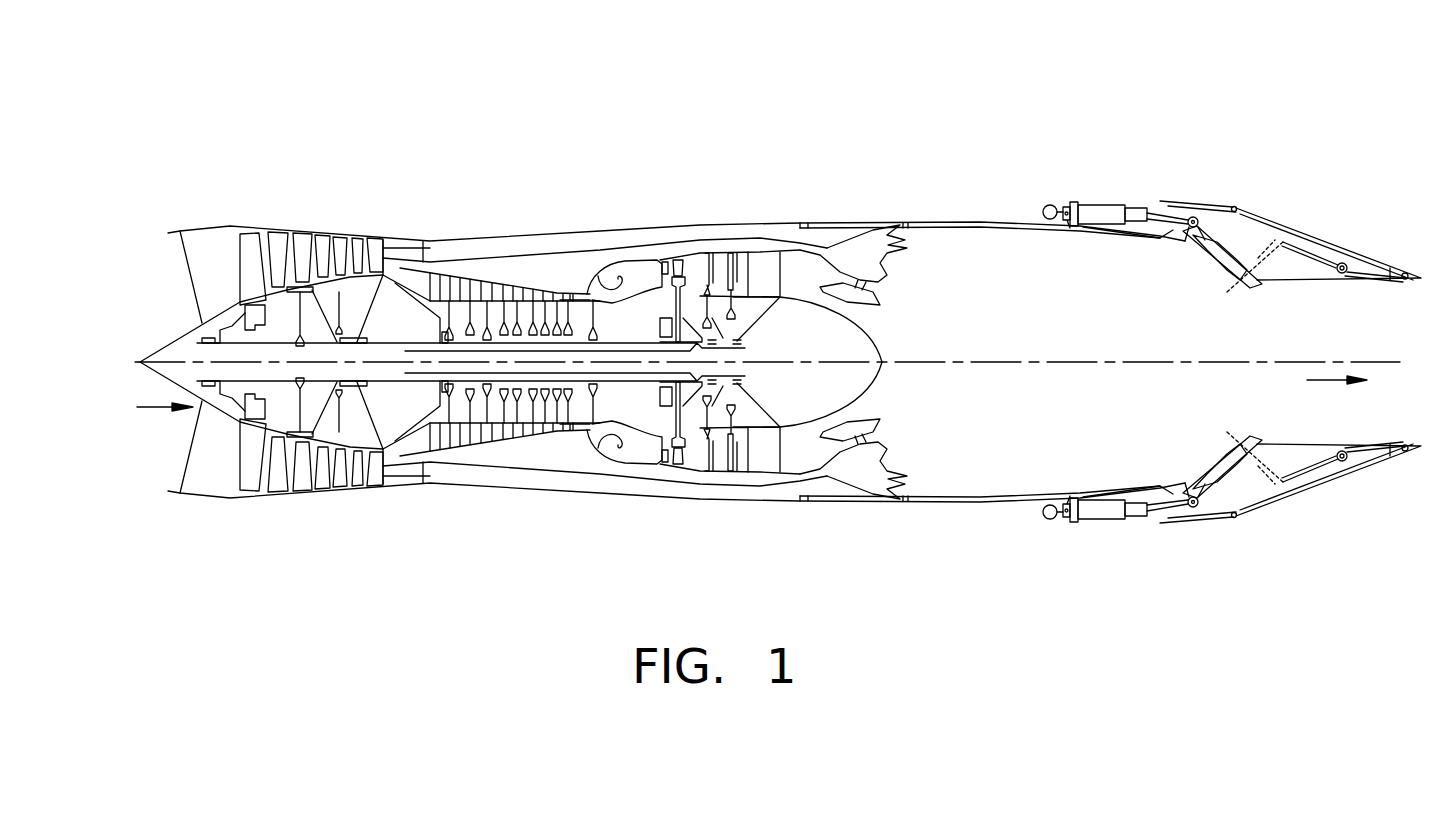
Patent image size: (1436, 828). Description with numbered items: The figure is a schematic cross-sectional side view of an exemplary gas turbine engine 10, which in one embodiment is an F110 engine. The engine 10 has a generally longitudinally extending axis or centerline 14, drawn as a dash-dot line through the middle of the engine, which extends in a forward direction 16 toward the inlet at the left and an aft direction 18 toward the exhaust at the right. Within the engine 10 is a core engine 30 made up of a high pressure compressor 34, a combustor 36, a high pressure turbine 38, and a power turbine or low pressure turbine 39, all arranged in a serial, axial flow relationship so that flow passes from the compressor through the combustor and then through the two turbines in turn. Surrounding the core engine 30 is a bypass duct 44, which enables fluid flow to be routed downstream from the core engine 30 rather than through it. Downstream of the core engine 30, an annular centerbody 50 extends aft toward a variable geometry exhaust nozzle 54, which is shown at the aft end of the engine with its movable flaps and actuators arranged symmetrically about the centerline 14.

The gas turbine engine 10 is at (252, 146).
The centerline 14 is at (1368, 358).
The forward direction 16 is at (145, 411).
The aft direction 18 is at (1323, 383).
The core engine 30 is at (481, 528).
The high pressure compressor 34 is at (484, 266).
The combustor 36 is at (627, 270).
The high pressure turbine 38 is at (680, 262).
The low pressure turbine 39 is at (705, 252).
The bypass duct 44 is at (705, 493).
The annular centerbody 50 is at (821, 396).
The variable geometry exhaust nozzle 54 is at (1353, 478).